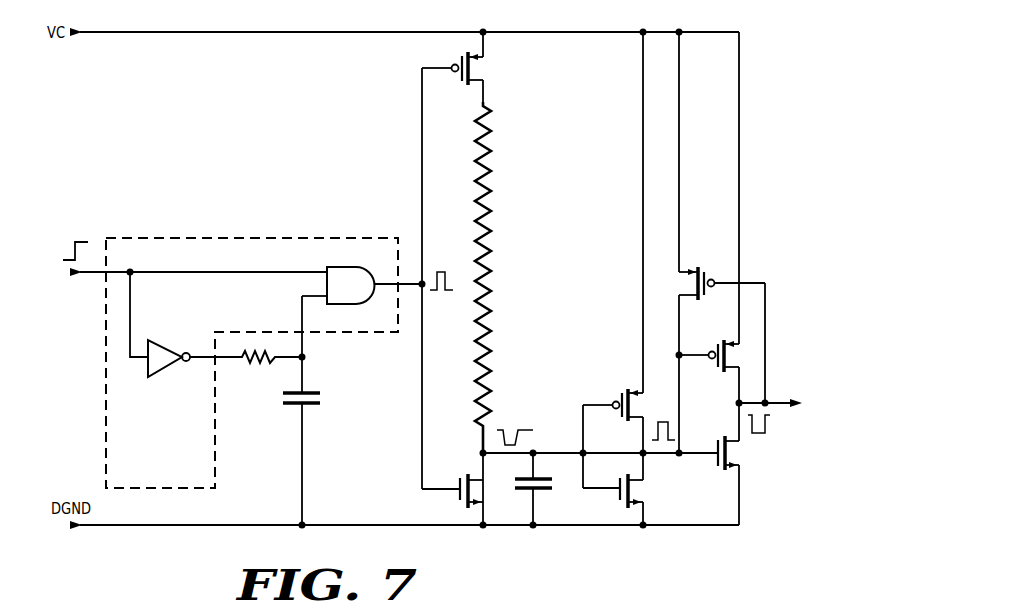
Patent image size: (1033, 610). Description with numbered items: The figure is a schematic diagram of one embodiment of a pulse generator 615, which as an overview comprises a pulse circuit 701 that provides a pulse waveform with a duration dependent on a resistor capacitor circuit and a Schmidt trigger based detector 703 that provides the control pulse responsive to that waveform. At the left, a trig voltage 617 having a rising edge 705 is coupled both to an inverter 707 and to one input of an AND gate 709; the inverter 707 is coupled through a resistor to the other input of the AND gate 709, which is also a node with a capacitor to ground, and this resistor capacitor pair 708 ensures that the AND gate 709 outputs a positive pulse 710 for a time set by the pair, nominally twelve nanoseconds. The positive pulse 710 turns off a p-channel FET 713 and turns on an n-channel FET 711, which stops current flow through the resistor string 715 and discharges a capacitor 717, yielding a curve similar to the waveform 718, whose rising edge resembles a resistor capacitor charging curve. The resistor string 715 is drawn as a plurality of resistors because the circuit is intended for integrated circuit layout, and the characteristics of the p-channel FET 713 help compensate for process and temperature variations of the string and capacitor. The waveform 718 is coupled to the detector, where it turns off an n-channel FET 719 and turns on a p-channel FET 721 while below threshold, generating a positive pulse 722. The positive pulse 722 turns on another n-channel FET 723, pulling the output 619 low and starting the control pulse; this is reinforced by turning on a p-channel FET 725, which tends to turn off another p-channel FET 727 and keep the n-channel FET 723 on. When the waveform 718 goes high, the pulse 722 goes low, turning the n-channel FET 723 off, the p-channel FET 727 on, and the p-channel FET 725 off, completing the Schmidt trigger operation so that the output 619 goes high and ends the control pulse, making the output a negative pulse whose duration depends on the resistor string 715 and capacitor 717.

The pulse generator 615 is at (562, 576).
The trig voltage 617 is at (70, 312).
The output 619 is at (798, 372).
The pulse circuit 701 is at (402, 203).
The Schmidt trigger based detector 703 is at (632, 345).
The rising edge 705 is at (79, 238).
The inverter 707 is at (165, 350).
The resistor capacitor pair 708 is at (340, 406).
The AND gate 709 is at (361, 296).
The positive pulse 710 is at (441, 270).
The n-channel FET 711 is at (460, 478).
The p-channel FET 713 is at (478, 70).
The resistor string 715 is at (517, 232).
The capacitor 717 is at (545, 492).
The waveform 718 is at (526, 427).
The n-channel FET 719 is at (637, 487).
The p-channel FET 721 is at (616, 400).
The positive pulse 722 is at (666, 421).
The n-channel FET 723 is at (735, 448).
The p-channel FET 725 is at (704, 274).
The p-channel FET 727 is at (710, 346).